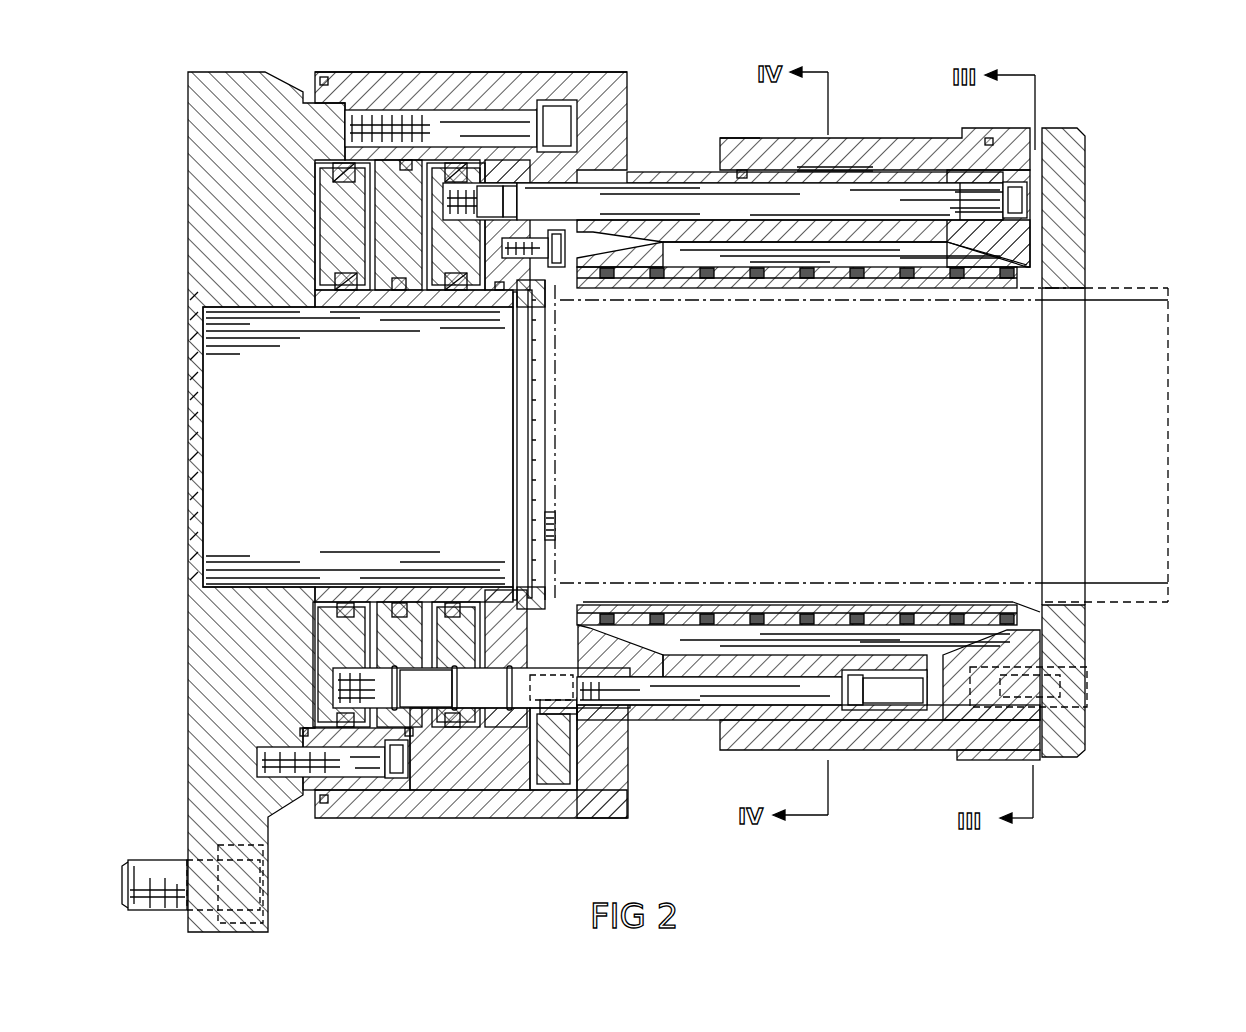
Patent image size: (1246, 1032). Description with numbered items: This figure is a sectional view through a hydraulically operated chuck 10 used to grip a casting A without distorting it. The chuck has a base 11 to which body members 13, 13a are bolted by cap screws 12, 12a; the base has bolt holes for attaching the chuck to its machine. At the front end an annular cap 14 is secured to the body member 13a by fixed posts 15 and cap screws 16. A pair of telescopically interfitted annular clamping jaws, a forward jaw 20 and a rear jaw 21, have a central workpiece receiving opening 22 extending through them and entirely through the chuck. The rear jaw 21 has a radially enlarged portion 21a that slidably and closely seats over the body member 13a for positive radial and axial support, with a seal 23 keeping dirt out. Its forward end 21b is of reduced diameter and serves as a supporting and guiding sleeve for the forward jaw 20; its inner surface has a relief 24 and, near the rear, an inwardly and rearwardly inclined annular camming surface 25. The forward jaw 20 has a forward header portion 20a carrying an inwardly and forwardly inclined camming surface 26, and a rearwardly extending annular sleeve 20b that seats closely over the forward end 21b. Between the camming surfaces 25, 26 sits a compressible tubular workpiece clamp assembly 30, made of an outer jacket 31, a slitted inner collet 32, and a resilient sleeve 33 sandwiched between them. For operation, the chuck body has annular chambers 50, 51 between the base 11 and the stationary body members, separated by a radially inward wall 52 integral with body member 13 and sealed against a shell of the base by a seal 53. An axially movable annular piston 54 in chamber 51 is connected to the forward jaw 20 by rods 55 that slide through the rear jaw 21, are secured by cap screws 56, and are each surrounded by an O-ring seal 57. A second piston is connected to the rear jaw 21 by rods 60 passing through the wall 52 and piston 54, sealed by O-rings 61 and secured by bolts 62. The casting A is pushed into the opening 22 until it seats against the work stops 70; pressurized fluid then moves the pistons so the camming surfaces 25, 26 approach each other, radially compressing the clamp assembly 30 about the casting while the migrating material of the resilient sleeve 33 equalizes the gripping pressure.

The chuck 10 is at (166, 201).
The base 11 is at (188, 686).
The cap screw 12 is at (361, 762).
The cap screw 12a is at (510, 115).
The body member 13 is at (312, 103).
The body member 13a is at (430, 105).
The annular cap 14 is at (1073, 153).
The fixed post 15 is at (975, 705).
The cap screw 16 is at (1087, 690).
The forward jaw 20 is at (846, 130).
The forward header portion 20a is at (920, 138).
The annular sleeve 20b is at (740, 138).
The rear jaw 21 is at (650, 165).
The radially enlarged portion 21a is at (478, 72).
The forward end 21b is at (737, 170).
The central workpiece receiving opening 22 is at (220, 515).
The seal 23 is at (324, 77).
The relief 24 is at (705, 232).
The camming surface 25 is at (637, 247).
The camming surface 26 is at (985, 262).
The workpiece clamp assembly 30 is at (907, 592).
The outer jacket 31 is at (822, 252).
The inner collet 32 is at (779, 292).
The resilient sleeve 33 is at (773, 595).
The annular chamber 50 is at (315, 292).
The annular chamber 51 is at (428, 292).
The wall 52 is at (410, 292).
The seal 53 is at (395, 292).
The piston 54 is at (468, 292).
The rod 55 is at (631, 208).
The cap screw 56 is at (327, 247).
The O-ring seal 57 is at (518, 200).
The rod 60 is at (550, 705).
The O-ring seal 61 is at (452, 688).
The bolt 62 is at (668, 690).
The work stop 70 is at (558, 300).
The casting A is at (1193, 621).